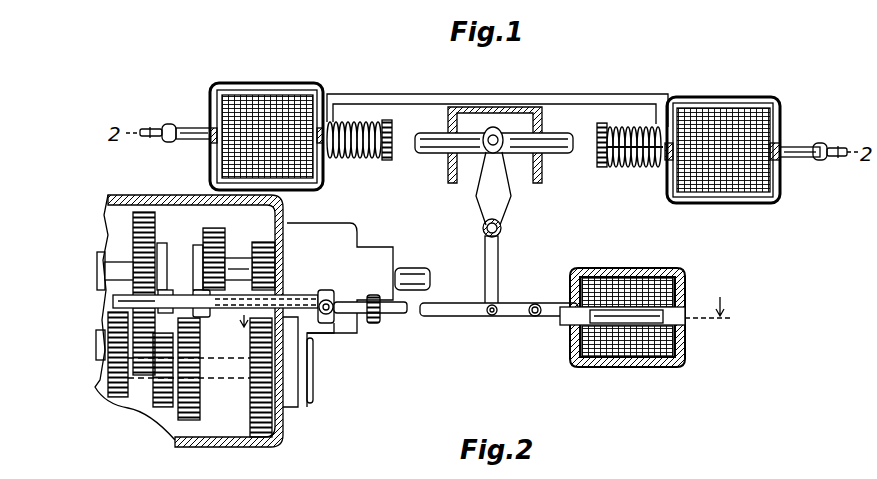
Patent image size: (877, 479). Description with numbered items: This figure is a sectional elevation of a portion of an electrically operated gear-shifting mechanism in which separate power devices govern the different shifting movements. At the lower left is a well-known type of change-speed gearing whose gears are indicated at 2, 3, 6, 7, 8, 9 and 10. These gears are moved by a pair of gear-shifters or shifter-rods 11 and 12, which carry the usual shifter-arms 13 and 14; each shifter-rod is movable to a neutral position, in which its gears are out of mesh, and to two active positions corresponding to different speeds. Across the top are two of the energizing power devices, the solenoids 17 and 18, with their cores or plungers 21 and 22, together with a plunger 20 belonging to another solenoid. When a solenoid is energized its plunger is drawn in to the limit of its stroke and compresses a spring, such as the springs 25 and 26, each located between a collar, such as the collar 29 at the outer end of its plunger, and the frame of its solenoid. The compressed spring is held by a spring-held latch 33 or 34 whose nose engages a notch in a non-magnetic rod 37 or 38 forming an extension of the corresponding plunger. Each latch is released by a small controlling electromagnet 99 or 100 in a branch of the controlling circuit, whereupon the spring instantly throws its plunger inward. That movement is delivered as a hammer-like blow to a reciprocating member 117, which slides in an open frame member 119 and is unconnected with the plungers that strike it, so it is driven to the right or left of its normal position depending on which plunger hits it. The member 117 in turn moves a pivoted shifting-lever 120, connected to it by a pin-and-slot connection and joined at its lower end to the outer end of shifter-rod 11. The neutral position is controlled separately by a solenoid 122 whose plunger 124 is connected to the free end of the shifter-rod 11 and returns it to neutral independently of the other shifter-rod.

The gear 2 is at (131, 293).
The gear 3 is at (490, 323).
The gear 6 is at (208, 301).
The gear 7 is at (120, 398).
The gear 8 is at (163, 408).
The gear 9 is at (195, 418).
The gear 10 is at (262, 438).
The shifter-rod 11 is at (398, 318).
The shifter-rod 12 is at (342, 312).
The shifter-arm 13 is at (157, 257).
The shifter-arm 14 is at (198, 247).
The solenoid 17 is at (270, 103).
The solenoid 18 is at (738, 113).
The plunger 20 is at (600, 147).
The plunger 21 is at (374, 122).
The plunger 22 is at (617, 167).
The spring 25 is at (345, 120).
The spring 26 is at (627, 127).
The collar 29 is at (393, 132).
The latch 33 is at (155, 127).
The latch 34 is at (225, 236).
The rod 37 is at (192, 140).
The rod 38 is at (803, 158).
The electromagnet 99 is at (178, 122).
The electromagnet 100 is at (824, 149).
The reciprocating member 117 is at (557, 153).
The open frame member 119 is at (470, 170).
The shifting-lever 120 is at (498, 267).
The solenoid 122 is at (638, 287).
The plunger 124 is at (628, 324).